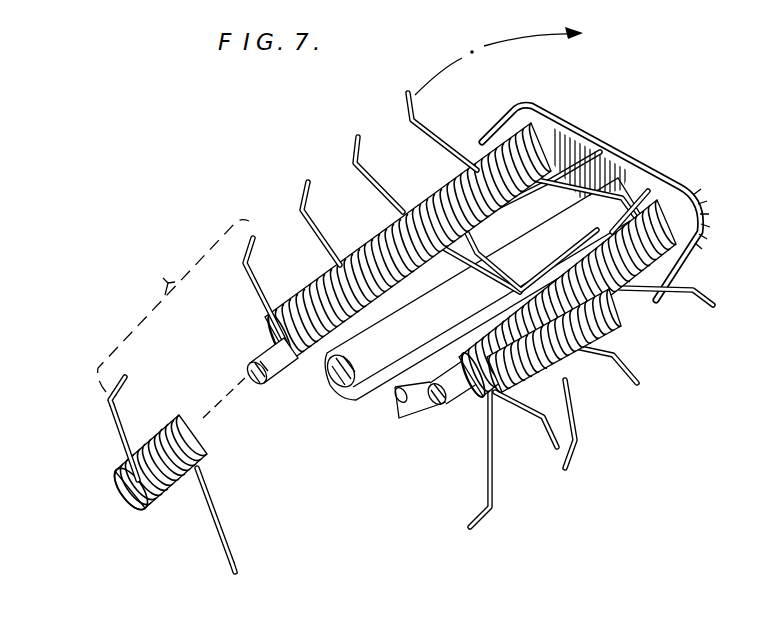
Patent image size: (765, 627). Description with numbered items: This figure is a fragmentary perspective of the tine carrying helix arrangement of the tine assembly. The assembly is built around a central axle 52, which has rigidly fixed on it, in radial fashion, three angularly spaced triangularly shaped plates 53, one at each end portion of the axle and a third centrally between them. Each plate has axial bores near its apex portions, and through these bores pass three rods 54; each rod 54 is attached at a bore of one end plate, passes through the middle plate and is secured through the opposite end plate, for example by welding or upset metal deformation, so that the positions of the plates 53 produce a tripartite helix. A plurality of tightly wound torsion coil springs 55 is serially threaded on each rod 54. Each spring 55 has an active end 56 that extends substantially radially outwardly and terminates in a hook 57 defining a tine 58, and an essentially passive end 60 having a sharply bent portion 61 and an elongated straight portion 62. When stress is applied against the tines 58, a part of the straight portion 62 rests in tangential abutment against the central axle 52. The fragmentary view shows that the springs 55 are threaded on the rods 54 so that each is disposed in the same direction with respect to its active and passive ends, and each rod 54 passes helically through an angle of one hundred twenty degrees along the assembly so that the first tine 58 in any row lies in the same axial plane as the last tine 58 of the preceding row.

The central axle 52 is at (437, 337).
The triangularly shaped plate 53 is at (626, 162).
The rod 54 is at (258, 352).
The torsion coil spring 55 is at (438, 191).
The active end 56 is at (118, 434).
The hook 57 is at (104, 401).
The tine 58 is at (131, 393).
The passive end 60 is at (234, 521).
The sharply bent portion 61 is at (181, 482).
The elongated straight portion 62 is at (238, 572).